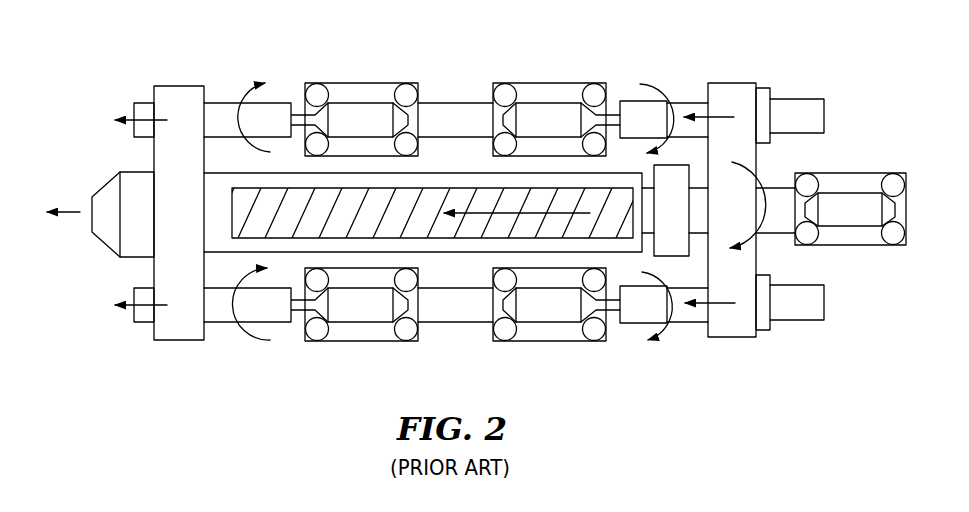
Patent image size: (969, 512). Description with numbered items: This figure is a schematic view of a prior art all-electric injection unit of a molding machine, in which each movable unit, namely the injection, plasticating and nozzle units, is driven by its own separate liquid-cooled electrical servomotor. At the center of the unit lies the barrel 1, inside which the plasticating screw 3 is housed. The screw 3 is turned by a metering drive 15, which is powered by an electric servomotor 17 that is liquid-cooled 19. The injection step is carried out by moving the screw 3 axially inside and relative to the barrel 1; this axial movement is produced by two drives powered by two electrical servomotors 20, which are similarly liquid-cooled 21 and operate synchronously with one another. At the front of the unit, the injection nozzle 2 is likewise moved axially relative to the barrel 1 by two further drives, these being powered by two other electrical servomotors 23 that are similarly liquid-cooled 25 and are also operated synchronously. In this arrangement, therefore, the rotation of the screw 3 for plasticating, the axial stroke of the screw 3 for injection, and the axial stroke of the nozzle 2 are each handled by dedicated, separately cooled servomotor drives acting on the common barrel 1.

The barrel 1 is at (213, 192).
The injection nozzle 2 is at (138, 252).
The plasticating screw 3 is at (282, 205).
The metering drive 15 is at (672, 257).
The electric servomotor 17 is at (853, 197).
The liquid cooling 19 is at (807, 180).
The electrical servomotors 20 is at (552, 105).
The liquid cooling 21 is at (503, 93).
The electrical servomotors 23 is at (357, 105).
The liquid cooling 25 is at (323, 89).